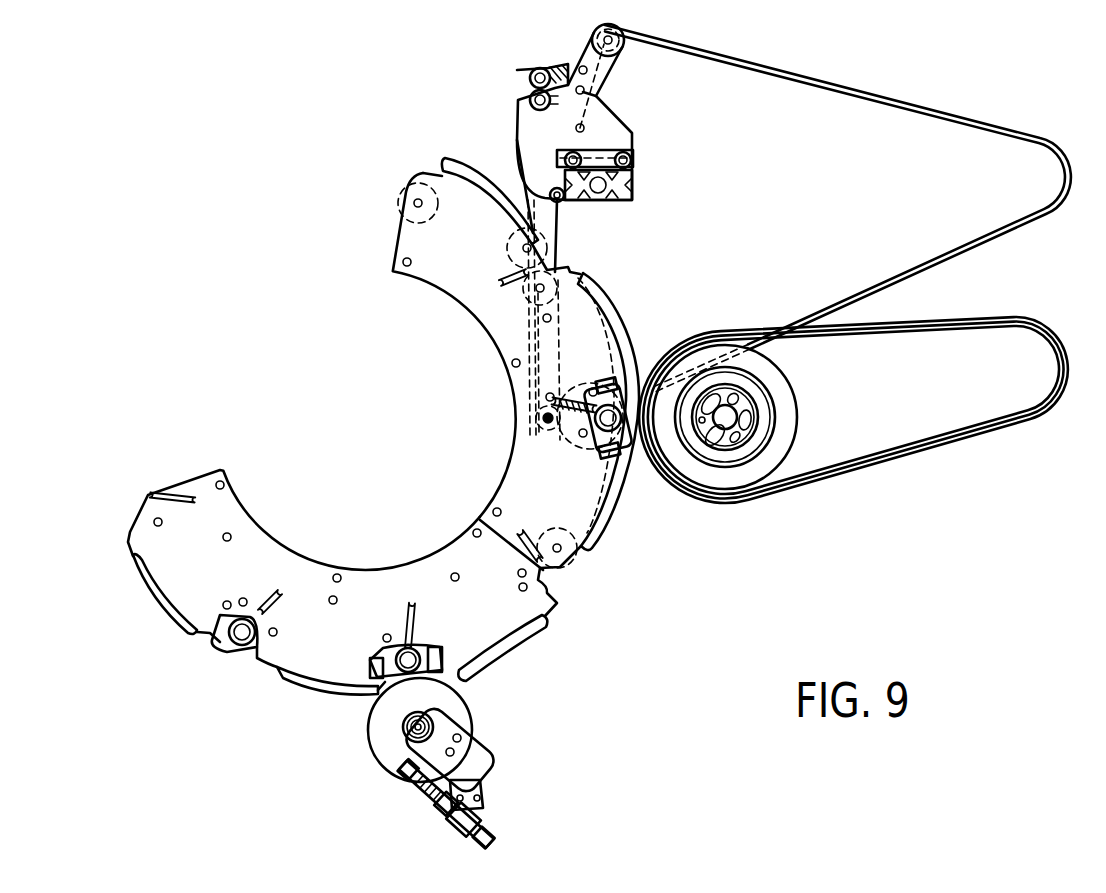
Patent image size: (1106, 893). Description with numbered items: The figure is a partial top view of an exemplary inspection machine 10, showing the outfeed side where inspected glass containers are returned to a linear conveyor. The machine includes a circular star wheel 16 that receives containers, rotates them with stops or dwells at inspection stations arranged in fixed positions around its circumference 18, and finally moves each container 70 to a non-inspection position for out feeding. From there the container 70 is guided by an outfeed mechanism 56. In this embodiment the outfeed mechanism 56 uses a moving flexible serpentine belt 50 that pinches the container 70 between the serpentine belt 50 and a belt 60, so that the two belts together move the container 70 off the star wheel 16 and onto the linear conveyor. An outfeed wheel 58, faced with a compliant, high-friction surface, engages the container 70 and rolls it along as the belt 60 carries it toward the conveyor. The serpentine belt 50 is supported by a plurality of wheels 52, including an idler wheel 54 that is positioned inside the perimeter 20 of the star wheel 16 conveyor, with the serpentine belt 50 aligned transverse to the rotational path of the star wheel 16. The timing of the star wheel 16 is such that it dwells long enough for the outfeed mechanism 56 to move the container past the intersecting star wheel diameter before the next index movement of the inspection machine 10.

The inspection machine 10 is at (599, 435).
The star wheel 16 is at (493, 627).
The circumference 18 is at (560, 603).
The perimeter 20 is at (263, 660).
The serpentine belt 50 is at (1000, 247).
The wheels 52 is at (627, 50).
The idler wheel 54 is at (627, 44).
The outfeed mechanism 56 is at (853, 437).
The outfeed wheel 58 is at (793, 400).
The belt 60 is at (890, 470).
The container 70 is at (628, 444).